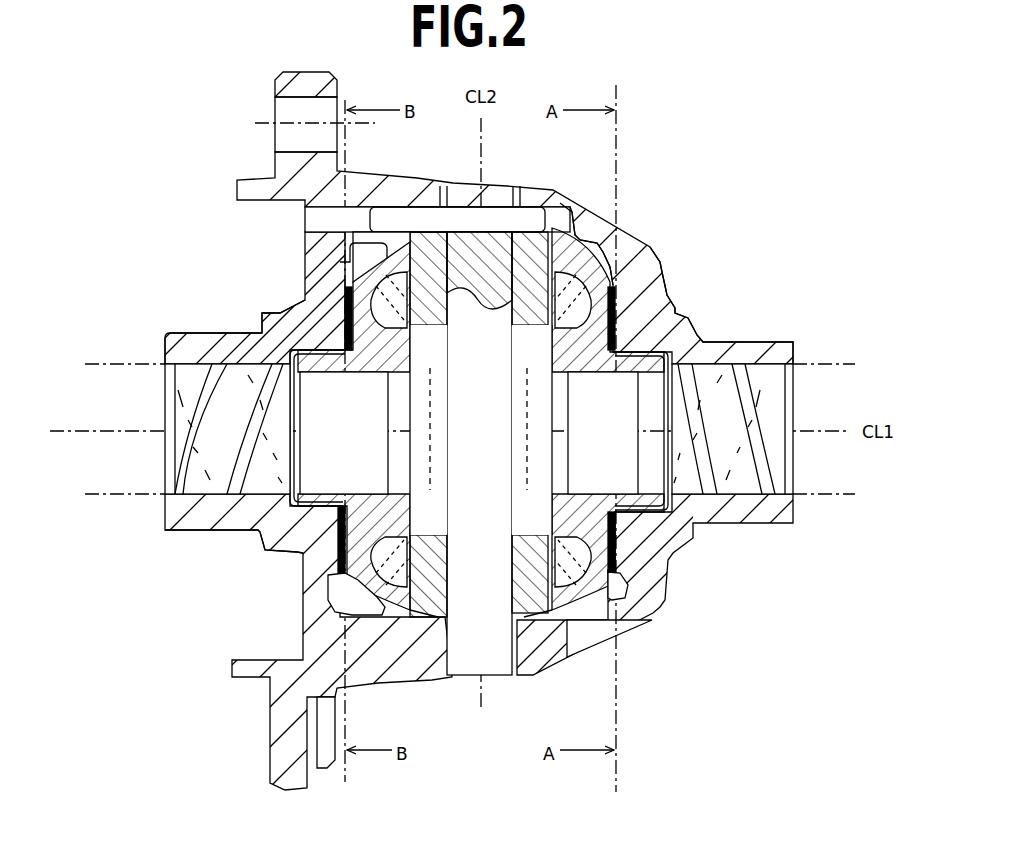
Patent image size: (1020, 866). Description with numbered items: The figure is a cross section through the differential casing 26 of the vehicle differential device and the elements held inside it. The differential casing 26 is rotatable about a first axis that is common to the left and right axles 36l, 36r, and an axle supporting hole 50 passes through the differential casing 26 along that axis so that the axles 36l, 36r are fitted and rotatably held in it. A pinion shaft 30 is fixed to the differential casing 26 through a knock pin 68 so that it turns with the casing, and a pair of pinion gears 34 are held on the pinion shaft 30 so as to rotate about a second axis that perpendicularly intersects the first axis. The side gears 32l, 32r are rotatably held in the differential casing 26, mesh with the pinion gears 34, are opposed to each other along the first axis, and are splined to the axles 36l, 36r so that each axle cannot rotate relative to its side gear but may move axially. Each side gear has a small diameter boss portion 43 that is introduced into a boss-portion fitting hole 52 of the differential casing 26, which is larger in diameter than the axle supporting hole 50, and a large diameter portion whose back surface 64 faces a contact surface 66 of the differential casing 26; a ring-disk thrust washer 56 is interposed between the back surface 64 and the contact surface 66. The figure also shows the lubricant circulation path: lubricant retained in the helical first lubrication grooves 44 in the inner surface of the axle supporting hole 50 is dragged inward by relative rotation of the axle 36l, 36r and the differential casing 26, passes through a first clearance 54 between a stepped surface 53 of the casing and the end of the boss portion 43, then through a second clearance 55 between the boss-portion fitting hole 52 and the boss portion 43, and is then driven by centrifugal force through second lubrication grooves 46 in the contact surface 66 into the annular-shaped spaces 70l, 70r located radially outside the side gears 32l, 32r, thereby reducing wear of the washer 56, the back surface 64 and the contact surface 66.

The differential casing 26 is at (645, 263).
The pinion shaft 30 is at (462, 660).
The left side gear 32l is at (303, 587).
The right side gear 32r is at (610, 575).
The pinion gear 34 is at (515, 622).
The left axle 36l is at (120, 494).
The right axle 36r is at (853, 365).
The boss portion 43 is at (297, 521).
The first lubrication groove 44 is at (755, 400).
The second lubrication groove 46 is at (615, 330).
The axle supporting hole 50 is at (175, 488).
The boss-portion fitting hole 52 is at (267, 508).
The stepped surface 53 is at (665, 375).
The first clearance 54 is at (163, 343).
The second clearance 55 is at (262, 326).
The thrust washer 56 is at (613, 530).
The back surface 64 is at (343, 306).
The contact surface 66 is at (297, 347).
The knock pin 68 is at (457, 225).
The left annular-shaped space 70l is at (357, 257).
The right annular-shaped space 70r is at (606, 270).